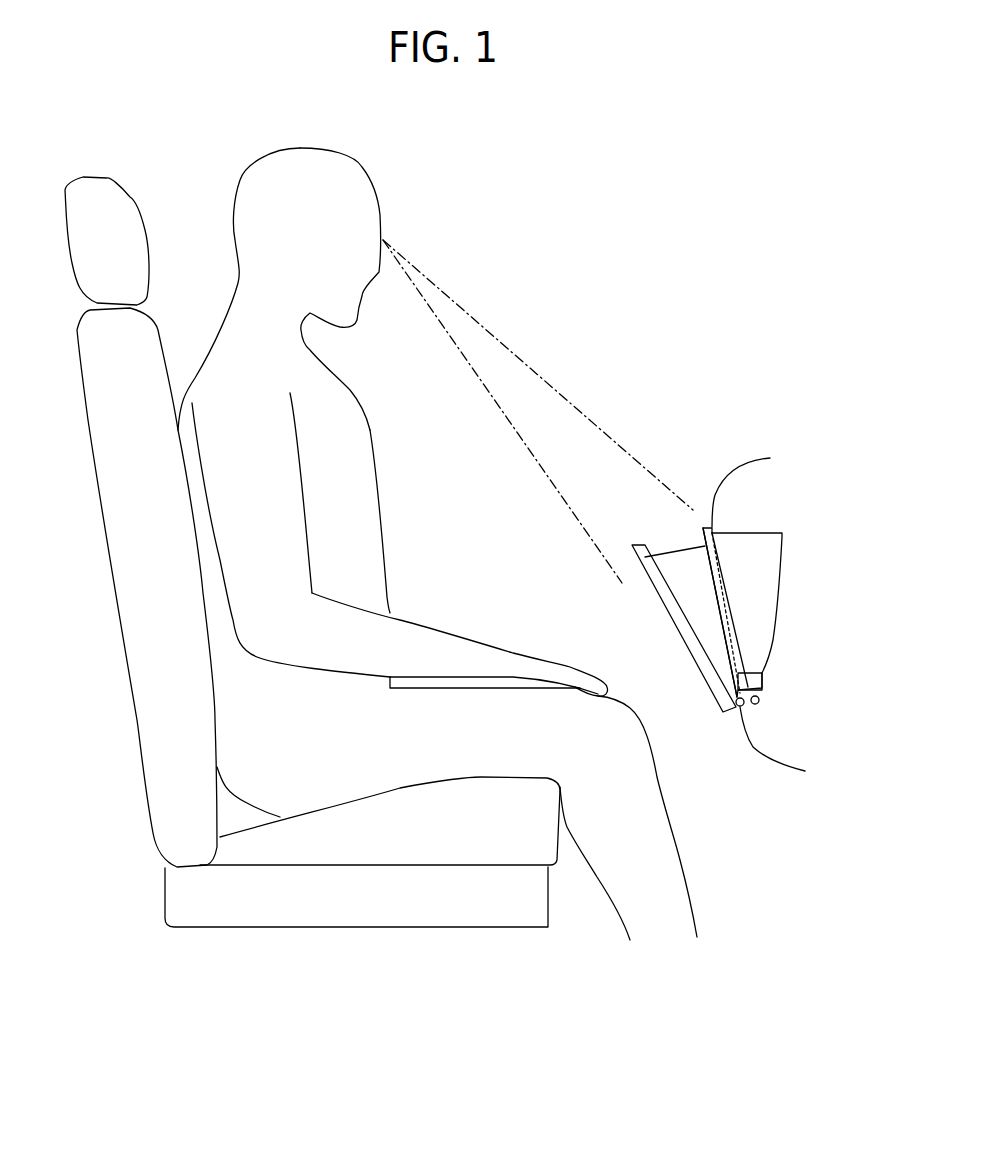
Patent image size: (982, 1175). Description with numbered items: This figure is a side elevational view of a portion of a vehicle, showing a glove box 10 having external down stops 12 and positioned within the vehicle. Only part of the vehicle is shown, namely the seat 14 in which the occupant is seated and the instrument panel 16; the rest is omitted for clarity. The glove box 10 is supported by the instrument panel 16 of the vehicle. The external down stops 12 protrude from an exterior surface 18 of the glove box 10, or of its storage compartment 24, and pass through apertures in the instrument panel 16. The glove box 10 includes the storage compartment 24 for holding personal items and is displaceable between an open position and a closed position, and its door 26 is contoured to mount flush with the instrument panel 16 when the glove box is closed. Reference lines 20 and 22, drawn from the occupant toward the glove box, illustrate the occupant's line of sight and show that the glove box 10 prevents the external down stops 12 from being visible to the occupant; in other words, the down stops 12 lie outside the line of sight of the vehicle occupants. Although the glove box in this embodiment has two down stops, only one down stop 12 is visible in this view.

The glove box 10 is at (650, 616).
The external down stops 12 is at (760, 705).
The seat 14 is at (258, 927).
The instrument panel 16 is at (740, 467).
The exterior surface 18 is at (762, 673).
The reference line 20 is at (517, 353).
The reference line 22 is at (482, 380).
The storage compartment 24 is at (672, 585).
The door 26 is at (686, 647).